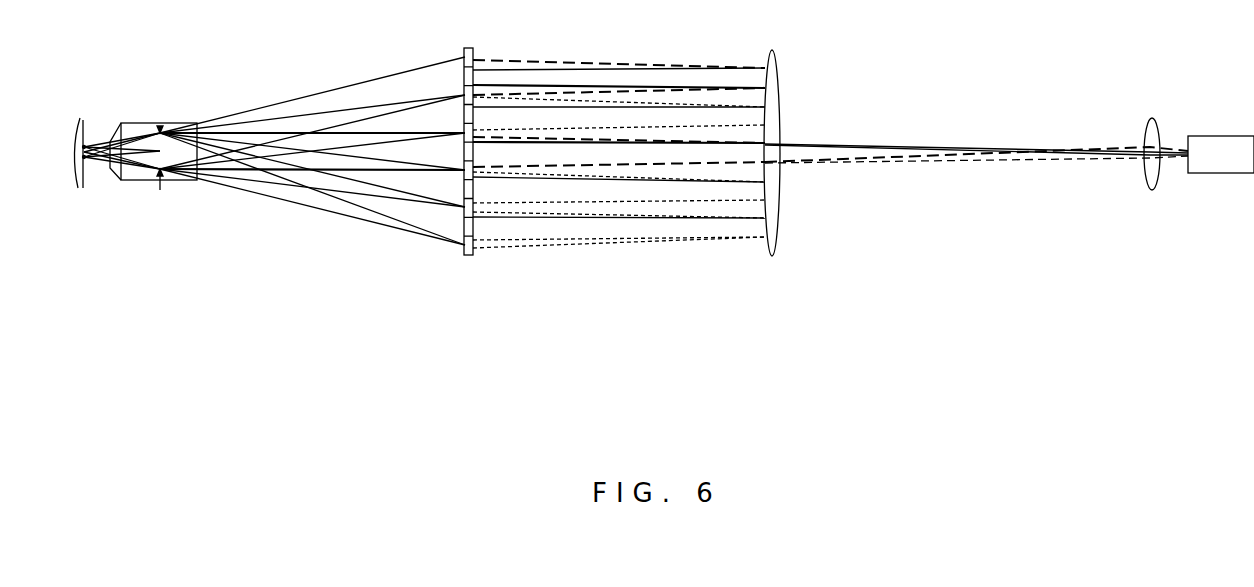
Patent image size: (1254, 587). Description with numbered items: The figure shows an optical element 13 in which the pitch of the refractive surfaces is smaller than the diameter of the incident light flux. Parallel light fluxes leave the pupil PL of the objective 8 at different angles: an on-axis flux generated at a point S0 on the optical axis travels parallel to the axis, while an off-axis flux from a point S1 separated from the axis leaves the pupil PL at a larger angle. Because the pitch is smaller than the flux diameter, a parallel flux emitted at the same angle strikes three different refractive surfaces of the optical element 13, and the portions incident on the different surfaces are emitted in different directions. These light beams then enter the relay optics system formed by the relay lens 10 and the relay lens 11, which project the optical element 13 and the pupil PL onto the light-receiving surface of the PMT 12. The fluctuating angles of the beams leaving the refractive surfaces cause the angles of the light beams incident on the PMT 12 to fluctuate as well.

The on-axis point S0 is at (80, 143).
The off-axis point S1 is at (77, 189).
The objective 8 is at (197, 107).
The pupil PL is at (160, 126).
The optical element 13 is at (469, 48).
The relay lens 10 is at (772, 50).
The relay lens 11 is at (1152, 118).
The PMT 12 is at (1210, 136).